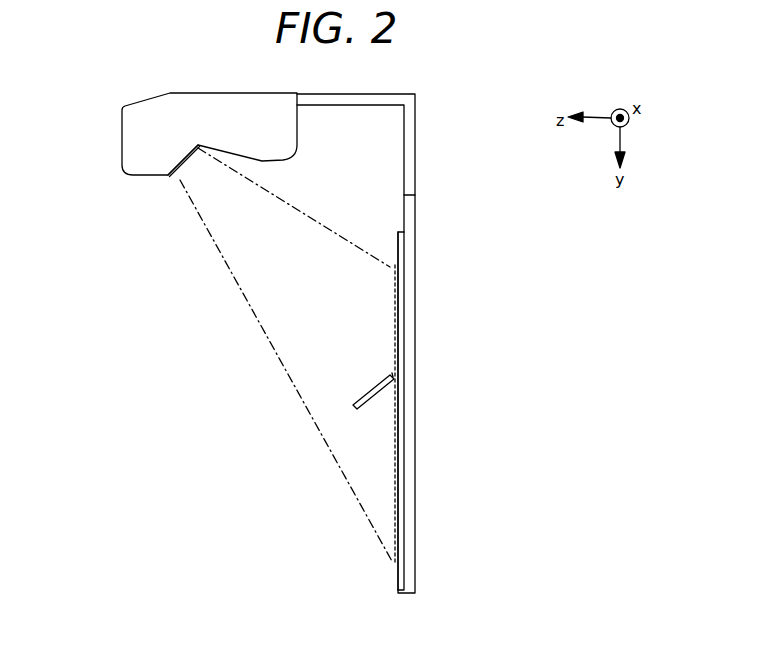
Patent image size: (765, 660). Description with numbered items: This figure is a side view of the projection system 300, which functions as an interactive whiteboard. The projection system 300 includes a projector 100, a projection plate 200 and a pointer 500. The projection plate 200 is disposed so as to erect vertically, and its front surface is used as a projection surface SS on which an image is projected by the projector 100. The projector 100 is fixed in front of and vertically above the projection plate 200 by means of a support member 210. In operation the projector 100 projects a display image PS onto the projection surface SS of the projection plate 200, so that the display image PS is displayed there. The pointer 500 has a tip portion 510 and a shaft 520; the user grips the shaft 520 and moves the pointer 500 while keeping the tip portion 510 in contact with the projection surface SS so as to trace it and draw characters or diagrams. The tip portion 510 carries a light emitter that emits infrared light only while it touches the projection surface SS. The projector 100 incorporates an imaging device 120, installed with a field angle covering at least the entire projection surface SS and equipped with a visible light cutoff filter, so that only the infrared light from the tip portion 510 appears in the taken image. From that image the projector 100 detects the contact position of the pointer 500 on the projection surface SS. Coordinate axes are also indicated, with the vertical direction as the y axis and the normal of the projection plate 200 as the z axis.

The projector 100 is at (122, 142).
The imaging device 120 is at (177, 176).
The projection plate 200 is at (410, 212).
The support member 210 is at (383, 100).
The projection system 300 is at (130, 380).
The pointer 500 is at (332, 348).
The tip portion 510 is at (393, 377).
The shaft 520 is at (375, 387).
The projection surface SS is at (398, 242).
The display image PS is at (393, 317).